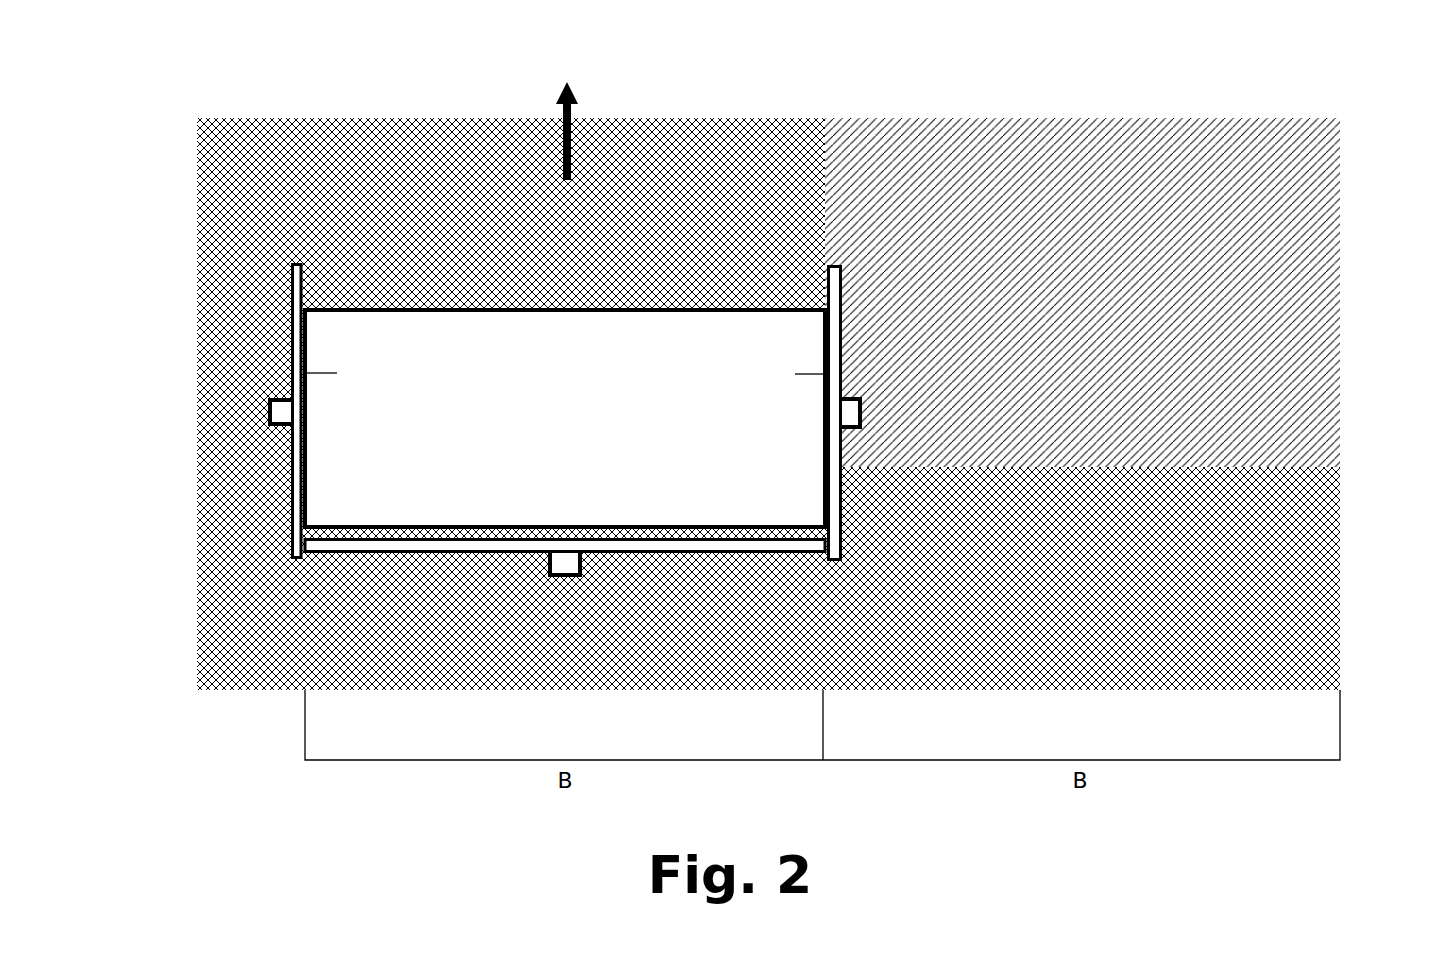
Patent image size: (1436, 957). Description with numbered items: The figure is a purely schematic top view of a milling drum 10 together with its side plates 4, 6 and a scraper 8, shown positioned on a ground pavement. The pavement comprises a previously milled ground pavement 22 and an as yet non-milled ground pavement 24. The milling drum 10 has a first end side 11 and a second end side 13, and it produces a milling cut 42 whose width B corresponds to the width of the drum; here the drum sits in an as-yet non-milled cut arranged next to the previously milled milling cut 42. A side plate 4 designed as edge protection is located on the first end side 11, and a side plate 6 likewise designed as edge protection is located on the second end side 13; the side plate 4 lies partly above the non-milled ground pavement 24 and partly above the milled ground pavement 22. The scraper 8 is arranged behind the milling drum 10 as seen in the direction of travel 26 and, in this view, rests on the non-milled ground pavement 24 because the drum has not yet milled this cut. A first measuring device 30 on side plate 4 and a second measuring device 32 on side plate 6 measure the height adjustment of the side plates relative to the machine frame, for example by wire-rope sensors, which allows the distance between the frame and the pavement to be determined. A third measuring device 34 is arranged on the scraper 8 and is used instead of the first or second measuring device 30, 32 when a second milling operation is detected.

The side plate 4 is at (835, 310).
The side plate 6 is at (294, 318).
The scraper 8 is at (355, 548).
The milling drum 10 is at (410, 410).
The first end side 11 is at (795, 374).
The second end side 13 is at (337, 373).
The previously milled ground pavement 22 is at (1143, 200).
The non-milled ground pavement 24 is at (275, 190).
The direction of travel 26 is at (565, 112).
The first measuring device 30 is at (870, 412).
The second measuring device 32 is at (283, 412).
The third measuring device 34 is at (565, 565).
The milling cut 42 is at (1215, 398).